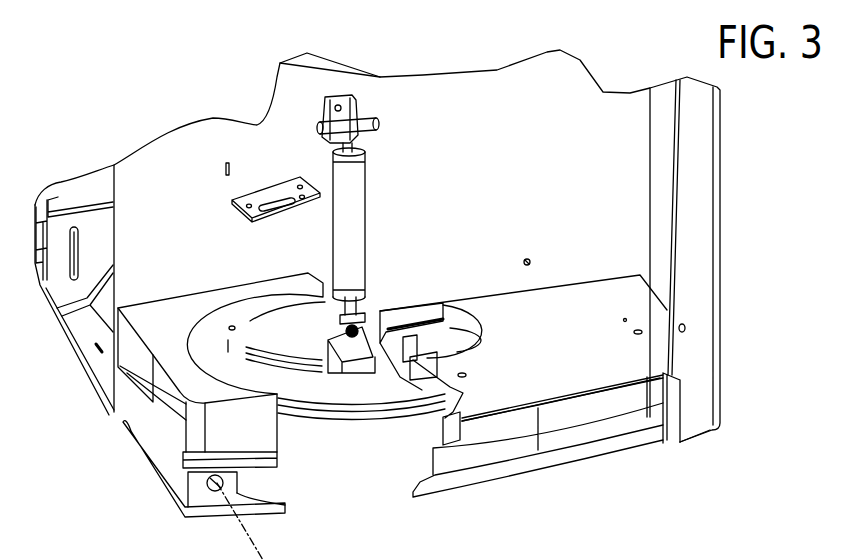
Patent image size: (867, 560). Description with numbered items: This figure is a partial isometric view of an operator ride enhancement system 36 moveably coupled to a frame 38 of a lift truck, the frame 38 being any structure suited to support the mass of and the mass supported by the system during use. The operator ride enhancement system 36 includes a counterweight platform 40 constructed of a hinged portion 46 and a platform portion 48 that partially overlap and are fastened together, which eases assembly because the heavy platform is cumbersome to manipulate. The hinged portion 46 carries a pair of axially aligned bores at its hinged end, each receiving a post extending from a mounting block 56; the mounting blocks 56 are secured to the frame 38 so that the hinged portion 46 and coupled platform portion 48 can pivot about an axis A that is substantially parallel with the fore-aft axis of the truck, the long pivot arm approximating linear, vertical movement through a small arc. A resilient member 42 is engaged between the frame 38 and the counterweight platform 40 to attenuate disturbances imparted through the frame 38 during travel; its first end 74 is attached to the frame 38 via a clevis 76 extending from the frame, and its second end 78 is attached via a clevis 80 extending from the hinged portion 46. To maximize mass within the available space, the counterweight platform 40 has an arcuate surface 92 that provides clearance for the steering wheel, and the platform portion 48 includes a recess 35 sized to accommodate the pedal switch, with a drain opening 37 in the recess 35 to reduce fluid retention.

The recess 35 is at (480, 328).
The operator ride enhancement system 36 is at (540, 240).
The drain opening 37 is at (470, 347).
The frame 38 is at (557, 113).
The counterweight platform 40 is at (610, 438).
The resilient member 42 is at (377, 235).
The hinged portion 46 is at (157, 443).
The platform portion 48 is at (600, 426).
The mounting block 56 is at (128, 413).
The first end 74 is at (360, 97).
The clevis 76 is at (333, 97).
The second end 78 is at (363, 303).
The clevis 80 is at (357, 350).
The arcuate surface 92 is at (382, 390).
The axis A is at (280, 540).